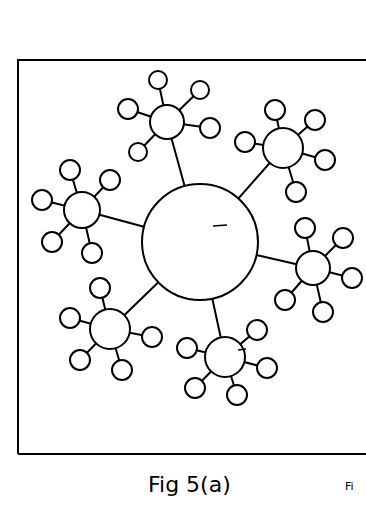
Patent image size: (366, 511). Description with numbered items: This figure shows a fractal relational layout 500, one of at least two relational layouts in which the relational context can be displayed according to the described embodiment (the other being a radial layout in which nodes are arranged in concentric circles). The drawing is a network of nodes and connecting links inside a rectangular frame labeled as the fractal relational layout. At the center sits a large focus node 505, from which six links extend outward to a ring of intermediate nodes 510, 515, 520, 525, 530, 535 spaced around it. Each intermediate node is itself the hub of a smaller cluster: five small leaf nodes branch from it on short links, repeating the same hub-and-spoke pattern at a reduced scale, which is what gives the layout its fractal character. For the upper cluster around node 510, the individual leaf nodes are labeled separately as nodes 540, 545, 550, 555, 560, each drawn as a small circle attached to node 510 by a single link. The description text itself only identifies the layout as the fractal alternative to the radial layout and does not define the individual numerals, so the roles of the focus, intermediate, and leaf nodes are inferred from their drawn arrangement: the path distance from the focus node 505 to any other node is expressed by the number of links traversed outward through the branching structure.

The fractal relational layout 500 is at (192, 257).
The central node 505 is at (197, 239).
The first-level node 510 is at (169, 116).
The first-level node 515 is at (285, 151).
The first-level node 520 is at (318, 270).
The first-level node 525 is at (227, 362).
The first-level node 530 is at (111, 329).
The first-level node 535 is at (76, 211).
The second-level node 540 is at (138, 158).
The second-level node 545 is at (128, 99).
The second-level node 550 is at (162, 72).
The second-level node 555 is at (206, 83).
The second-level node 560 is at (208, 133).